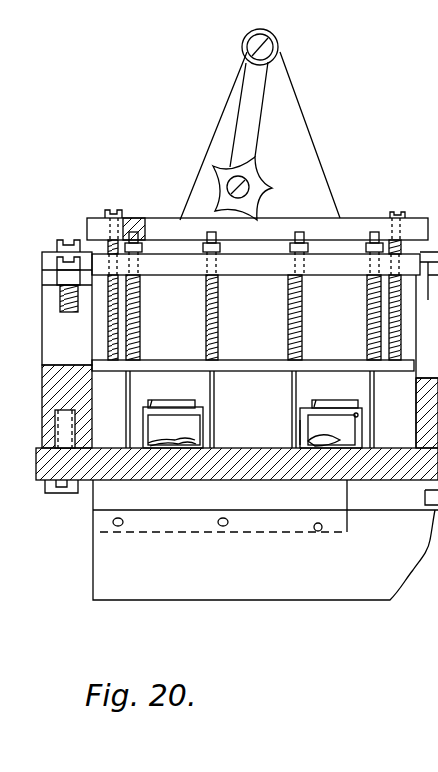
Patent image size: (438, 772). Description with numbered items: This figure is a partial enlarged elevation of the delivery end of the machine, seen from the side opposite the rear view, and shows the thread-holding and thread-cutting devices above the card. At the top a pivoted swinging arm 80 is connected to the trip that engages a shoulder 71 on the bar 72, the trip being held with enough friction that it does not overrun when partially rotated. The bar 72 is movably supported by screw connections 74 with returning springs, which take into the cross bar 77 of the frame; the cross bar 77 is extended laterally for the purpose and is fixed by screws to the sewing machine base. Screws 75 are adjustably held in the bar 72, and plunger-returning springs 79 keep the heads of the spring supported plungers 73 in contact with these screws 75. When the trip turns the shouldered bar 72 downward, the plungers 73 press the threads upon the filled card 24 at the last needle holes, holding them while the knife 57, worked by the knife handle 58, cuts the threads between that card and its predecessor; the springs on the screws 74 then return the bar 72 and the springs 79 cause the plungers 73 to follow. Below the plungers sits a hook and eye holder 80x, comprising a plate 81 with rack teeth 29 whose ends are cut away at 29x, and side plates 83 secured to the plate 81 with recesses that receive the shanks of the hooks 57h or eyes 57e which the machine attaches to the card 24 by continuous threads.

The shoulder 71 is at (262, 218).
The pivoted swinging arm 80 is at (258, 160).
The bar 72 is at (363, 225).
The screw connections 74 is at (421, 340).
The screws 75 is at (145, 248).
The plunger-returning springs 79 is at (366, 318).
The cross bar 77 is at (261, 365).
The filled card 24 is at (409, 443).
The spring supported plungers 73 is at (292, 400).
The rack teeth 29 is at (252, 418).
The cut-away ends of rack teeth 29x is at (232, 393).
The plate 81 is at (320, 410).
The side plates 83 is at (300, 424).
The hook and eye holder 80x is at (245, 431).
The knife handle 58 is at (265, 540).
The knife 57 is at (260, 499).
The hooks 57h is at (330, 455).
The eyes 57e is at (312, 452).